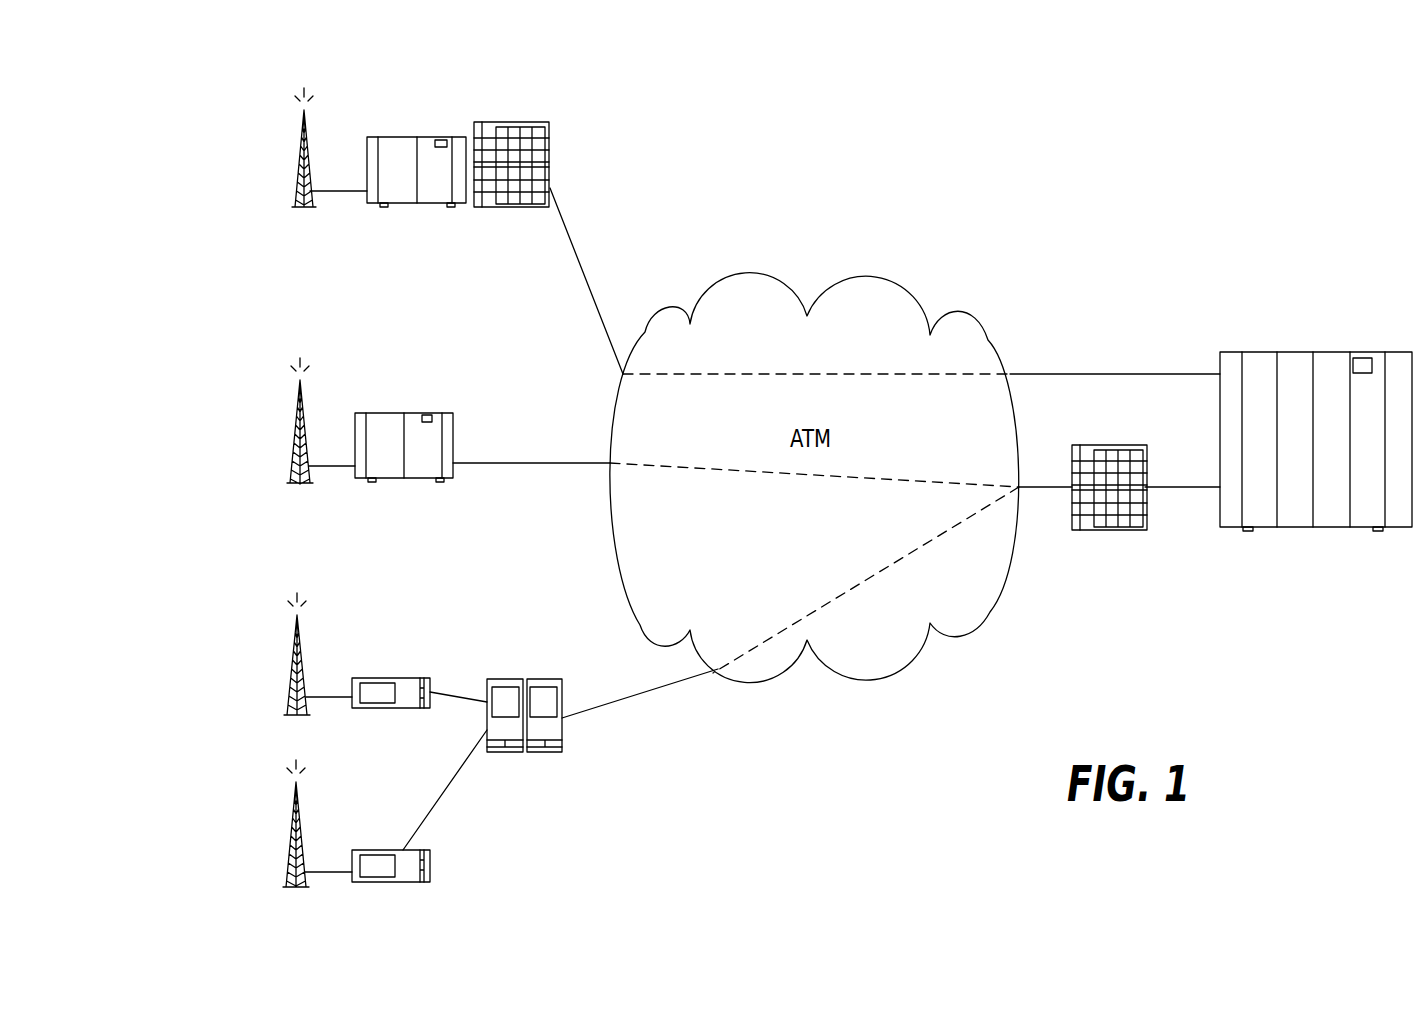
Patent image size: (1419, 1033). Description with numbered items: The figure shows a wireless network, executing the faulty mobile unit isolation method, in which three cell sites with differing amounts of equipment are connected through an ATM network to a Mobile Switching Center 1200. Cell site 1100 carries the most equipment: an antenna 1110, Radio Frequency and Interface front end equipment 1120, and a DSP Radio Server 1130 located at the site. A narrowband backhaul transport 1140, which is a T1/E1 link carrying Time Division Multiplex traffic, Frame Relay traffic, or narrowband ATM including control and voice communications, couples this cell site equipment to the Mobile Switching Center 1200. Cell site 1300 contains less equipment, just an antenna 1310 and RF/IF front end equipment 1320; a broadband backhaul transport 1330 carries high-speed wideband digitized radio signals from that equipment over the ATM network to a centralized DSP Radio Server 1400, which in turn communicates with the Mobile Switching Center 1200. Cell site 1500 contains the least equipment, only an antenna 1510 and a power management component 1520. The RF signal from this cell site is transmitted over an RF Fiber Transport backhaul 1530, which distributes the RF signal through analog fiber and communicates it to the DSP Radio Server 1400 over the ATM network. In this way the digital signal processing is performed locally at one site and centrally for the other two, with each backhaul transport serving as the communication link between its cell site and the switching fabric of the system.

The cell site 1100 is at (262, 153).
The antenna 1110 is at (300, 125).
The RF/IF front end equipment 1120 is at (396, 137).
The DSP Radio Server 1130 is at (511, 122).
The narrowband backhaul transport 1140 is at (580, 270).
The Mobile Switching Center 1200 is at (1288, 352).
The cell site 1300 is at (266, 443).
The antenna 1310 is at (297, 407).
The RF/IF front end equipment 1320 is at (384, 413).
The broadband backhaul transport 1330 is at (588, 465).
The centralized DSP Radio Server 1400 is at (1090, 445).
The cell site 1500 is at (260, 760).
The antenna 1510 is at (295, 632).
The power management component 1520 is at (400, 710).
The RF Fiber Transport backhaul 1530 is at (633, 703).